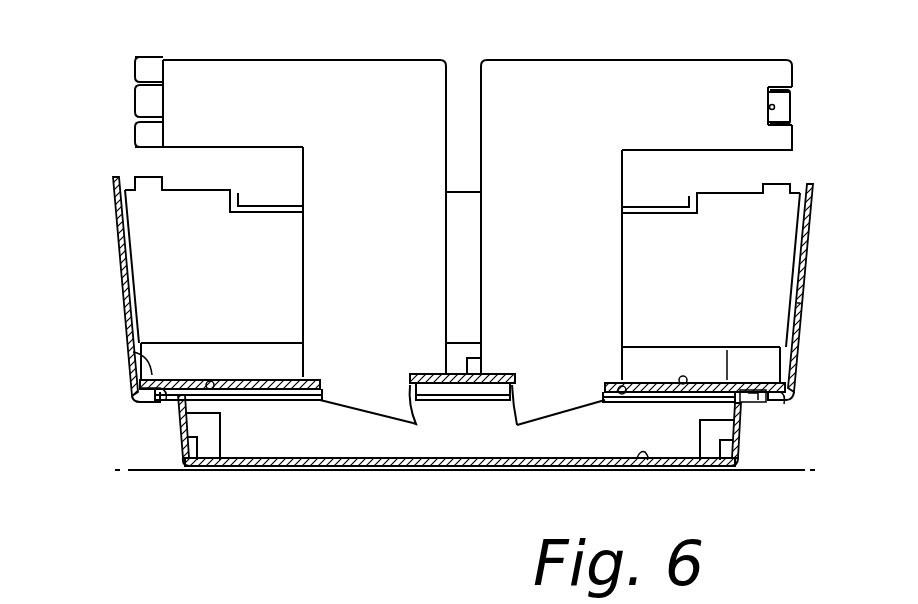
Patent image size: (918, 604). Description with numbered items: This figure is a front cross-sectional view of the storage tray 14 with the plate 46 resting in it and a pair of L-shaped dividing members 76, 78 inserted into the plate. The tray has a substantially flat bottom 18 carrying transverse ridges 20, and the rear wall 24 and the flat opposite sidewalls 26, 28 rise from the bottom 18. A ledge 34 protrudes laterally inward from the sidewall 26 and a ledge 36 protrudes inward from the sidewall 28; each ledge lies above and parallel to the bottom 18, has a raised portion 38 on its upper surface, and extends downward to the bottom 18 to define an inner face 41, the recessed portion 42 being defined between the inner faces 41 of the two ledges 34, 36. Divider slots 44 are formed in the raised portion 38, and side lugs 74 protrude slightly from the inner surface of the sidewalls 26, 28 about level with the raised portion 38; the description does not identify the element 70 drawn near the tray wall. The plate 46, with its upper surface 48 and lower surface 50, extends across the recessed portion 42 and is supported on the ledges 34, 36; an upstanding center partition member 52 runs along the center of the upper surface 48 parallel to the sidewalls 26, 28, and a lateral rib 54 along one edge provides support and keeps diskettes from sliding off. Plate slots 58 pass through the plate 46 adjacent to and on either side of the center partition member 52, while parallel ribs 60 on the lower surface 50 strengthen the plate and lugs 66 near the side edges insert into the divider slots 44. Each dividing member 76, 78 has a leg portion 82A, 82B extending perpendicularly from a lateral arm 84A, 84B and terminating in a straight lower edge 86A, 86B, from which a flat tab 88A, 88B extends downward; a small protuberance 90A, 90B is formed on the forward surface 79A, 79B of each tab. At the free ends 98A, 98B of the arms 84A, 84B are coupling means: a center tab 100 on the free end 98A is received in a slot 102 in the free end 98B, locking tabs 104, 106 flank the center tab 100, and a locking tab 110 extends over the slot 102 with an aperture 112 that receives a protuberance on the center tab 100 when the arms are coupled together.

The storage tray 14 is at (84, 222).
The bottom 18 is at (242, 452).
The transverse ridges 20 is at (647, 460).
The rear wall 24 is at (767, 213).
The sidewall 26 is at (118, 259).
The sidewall 28 is at (812, 218).
The ledge 34 is at (136, 403).
The ledge 36 is at (778, 405).
The raised portion 38 is at (135, 353).
The inner face 41 is at (167, 402).
The recessed portion 42 is at (363, 440).
The divider slots 44 is at (172, 406).
The plate 46 is at (727, 350).
The upper surface 48 is at (683, 384).
The lower surface 50 is at (210, 365).
The center partition member 52 is at (462, 362).
The lateral rib 54 is at (760, 360).
The plate slots 58 is at (410, 383).
The ribs 60 is at (498, 385).
The lugs 66 is at (743, 402).
The tray left wall 70 is at (190, 462).
The side lugs 74 is at (782, 388).
The dividing member 76 is at (306, 90).
The dividing member 78 is at (603, 78).
The forward surface 79A is at (385, 102).
The forward surface 79B is at (528, 88).
The leg portion 82A is at (323, 255).
The leg portion 82B is at (597, 267).
The lateral arm 84A is at (190, 72).
The lateral arm 84B is at (685, 82).
The lower edge 86A is at (290, 365).
The lower edge 86B is at (640, 365).
The tab 88A is at (397, 410).
The tab 88B is at (513, 400).
The protuberance 90A is at (417, 419).
The protuberance 90B is at (517, 424).
The free end 98A is at (158, 64).
The free end 98B is at (792, 73).
The center tab 100 is at (135, 100).
The slot 102 is at (790, 125).
The locking tab 104 is at (135, 69).
The locking tab 106 is at (135, 133).
The locking tab 110 is at (787, 102).
The aperture 112 is at (769, 107).